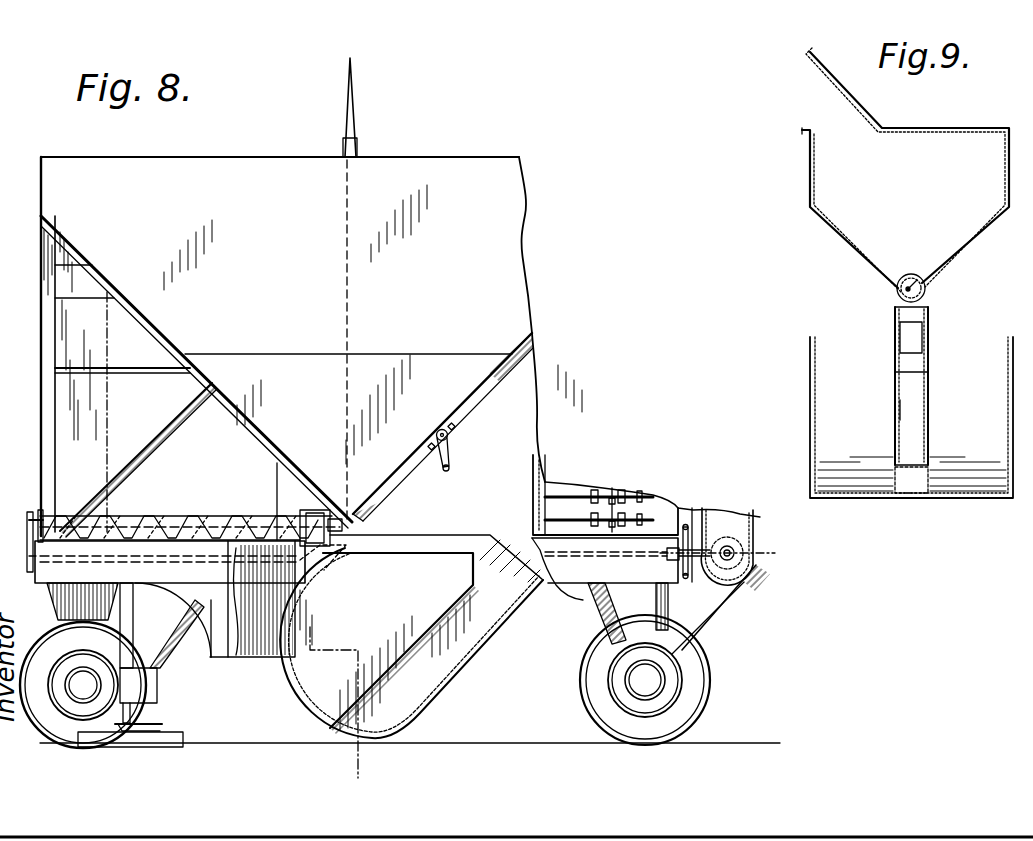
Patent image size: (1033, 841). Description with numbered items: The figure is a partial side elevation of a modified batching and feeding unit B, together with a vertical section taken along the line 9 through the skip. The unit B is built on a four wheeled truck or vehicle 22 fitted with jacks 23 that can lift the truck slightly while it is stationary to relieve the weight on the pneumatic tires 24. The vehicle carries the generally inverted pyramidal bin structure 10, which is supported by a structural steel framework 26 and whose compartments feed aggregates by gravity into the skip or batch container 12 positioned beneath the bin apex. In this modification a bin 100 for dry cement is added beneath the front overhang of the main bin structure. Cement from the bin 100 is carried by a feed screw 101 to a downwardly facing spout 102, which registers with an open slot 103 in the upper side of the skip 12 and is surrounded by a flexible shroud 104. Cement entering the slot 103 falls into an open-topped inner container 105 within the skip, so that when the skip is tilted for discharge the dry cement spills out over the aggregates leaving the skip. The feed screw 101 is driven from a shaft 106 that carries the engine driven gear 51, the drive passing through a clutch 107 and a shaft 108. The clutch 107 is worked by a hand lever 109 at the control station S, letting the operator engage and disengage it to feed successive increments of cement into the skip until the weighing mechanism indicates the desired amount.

In FIG. 8, the bin structure 10 is at (92, 239).
In FIG. 8, the section line 9— 9 is at (117, 317).
In FIG. 8, the bin for dry cement 100 is at (75, 394).
In FIG. 9, the bin for dry cement 100 is at (857, 237).
In FIG. 8, the structural steel framework 26 is at (62, 437).
In FIG. 8, the central or intermediate unit B is at (30, 496).
In FIG. 8, the feed screw 101 is at (252, 520).
In FIG. 9, the feed screw 101 is at (914, 276).
In FIG. 8, the shaft 108 is at (198, 560).
In FIG. 8, the spout 102 is at (303, 545).
In FIG. 8, the flexible shroud 104 is at (296, 565).
In FIG. 8, the truck or vehicle 22 is at (226, 655).
In FIG. 8, the jacks 23 is at (140, 681).
In FIG. 8, the pneumatic tires 24 is at (48, 640).
In FIG. 8, the skip or batch container 12 is at (456, 687).
In FIG. 9, the skip or batch container 12 is at (826, 414).
In FIG. 8, the inner container 105 is at (392, 647).
In FIG. 9, the inner container 105 is at (905, 410).
In FIG. 8, the open slot 103 is at (306, 594).
In FIG. 9, the open slot 103 is at (897, 345).
In FIG. 8, the control station S is at (498, 516).
In FIG. 8, the hand lever 109 is at (686, 508).
In FIG. 8, the speed reduction gearing 51 is at (735, 567).
In FIG. 8, the shaft 106 is at (732, 553).
In FIG. 8, the clutch 107 is at (648, 613).